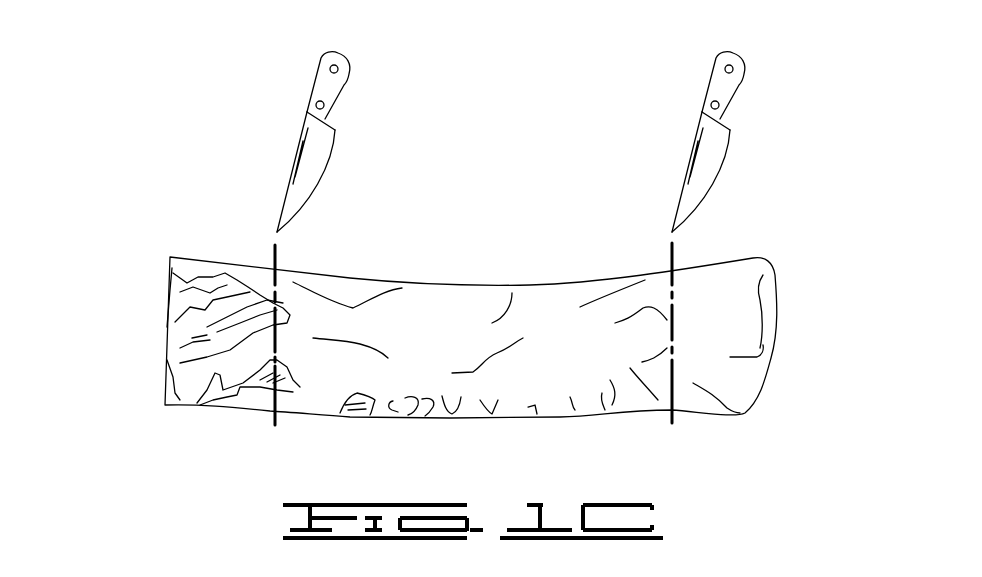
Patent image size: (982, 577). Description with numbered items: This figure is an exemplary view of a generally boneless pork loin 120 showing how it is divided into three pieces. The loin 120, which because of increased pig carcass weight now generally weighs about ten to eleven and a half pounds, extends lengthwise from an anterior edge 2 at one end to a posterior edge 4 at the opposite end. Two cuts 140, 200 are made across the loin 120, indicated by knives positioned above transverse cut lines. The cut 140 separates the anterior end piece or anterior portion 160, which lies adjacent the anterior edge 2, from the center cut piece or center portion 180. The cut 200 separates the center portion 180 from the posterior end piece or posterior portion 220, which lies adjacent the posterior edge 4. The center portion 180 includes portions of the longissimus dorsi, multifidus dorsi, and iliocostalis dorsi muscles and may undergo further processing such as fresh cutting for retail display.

The anterior edge 2 is at (163, 365).
The posterior edge 4 is at (772, 350).
The generally boneless pork loin 120 is at (533, 119).
The cut 140 is at (298, 238).
The anterior portion 160 is at (177, 318).
The center portion 180 is at (447, 305).
The cut 200 is at (691, 237).
The posterior portion 220 is at (733, 280).